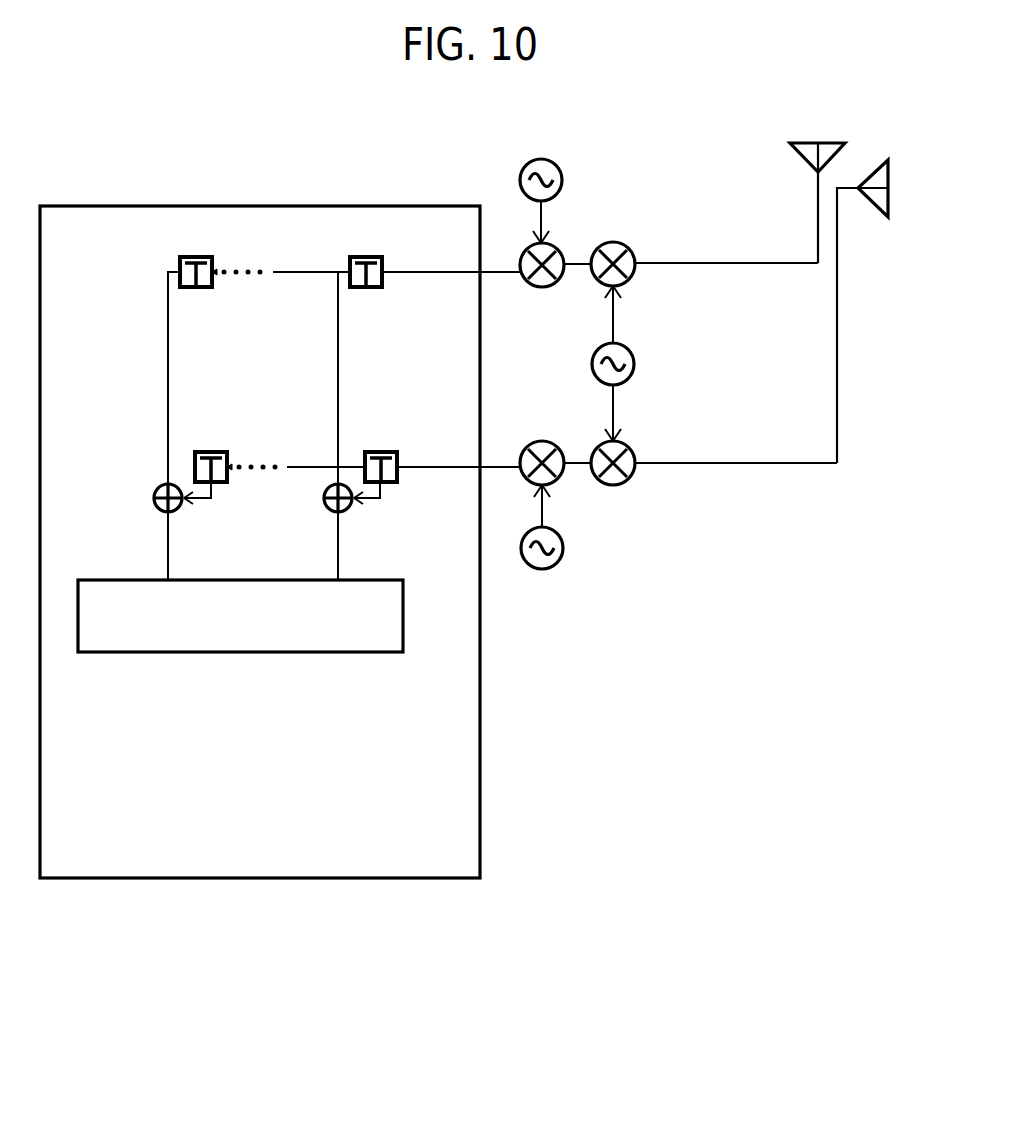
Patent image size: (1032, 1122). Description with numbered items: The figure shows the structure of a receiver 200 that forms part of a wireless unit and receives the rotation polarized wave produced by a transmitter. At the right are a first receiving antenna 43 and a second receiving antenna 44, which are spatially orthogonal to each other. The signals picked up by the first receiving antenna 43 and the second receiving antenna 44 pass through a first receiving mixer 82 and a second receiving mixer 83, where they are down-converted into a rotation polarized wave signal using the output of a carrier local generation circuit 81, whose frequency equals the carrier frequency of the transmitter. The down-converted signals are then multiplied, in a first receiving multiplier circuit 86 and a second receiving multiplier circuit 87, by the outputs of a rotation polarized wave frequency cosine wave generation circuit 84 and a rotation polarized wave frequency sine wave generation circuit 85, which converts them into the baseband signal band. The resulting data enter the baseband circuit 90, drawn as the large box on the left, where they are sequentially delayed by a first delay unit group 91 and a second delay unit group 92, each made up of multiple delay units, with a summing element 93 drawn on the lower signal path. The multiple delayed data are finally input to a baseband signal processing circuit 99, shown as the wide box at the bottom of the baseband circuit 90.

The receiver 200 is at (300, 168).
The baseband circuit 90 is at (365, 208).
The first delay unit group 91 is at (377, 255).
The second delay unit group 92 is at (392, 450).
The adder 93 is at (327, 512).
The baseband signal processing circuit 99 is at (368, 653).
The carrier local generation circuit 81 is at (623, 346).
The first receiving mixer 82 is at (628, 247).
The second receiving mixer 83 is at (628, 446).
The rotation polarized wave frequency cosine wave generation circuit 84 is at (562, 176).
The rotation polarized wave frequency sine wave generation circuit 85 is at (563, 545).
The first receiving multiplier circuit 86 is at (558, 247).
The second receiving multiplier circuit 87 is at (537, 444).
The first receiving antenna 43 is at (833, 143).
The second receiving antenna 44 is at (892, 202).